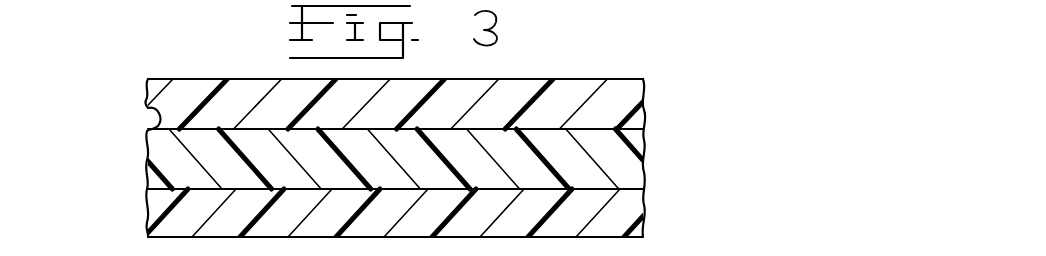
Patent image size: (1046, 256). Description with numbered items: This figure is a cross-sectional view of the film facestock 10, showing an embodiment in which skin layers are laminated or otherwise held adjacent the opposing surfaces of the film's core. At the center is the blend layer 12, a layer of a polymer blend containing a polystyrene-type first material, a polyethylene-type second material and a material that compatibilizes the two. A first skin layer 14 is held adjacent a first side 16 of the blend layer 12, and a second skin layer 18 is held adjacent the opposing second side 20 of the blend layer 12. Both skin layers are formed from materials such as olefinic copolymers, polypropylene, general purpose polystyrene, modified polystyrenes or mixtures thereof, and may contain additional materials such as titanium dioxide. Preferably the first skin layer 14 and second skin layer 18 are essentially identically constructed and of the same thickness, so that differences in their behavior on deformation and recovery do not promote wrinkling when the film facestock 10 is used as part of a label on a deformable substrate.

The film facestock 10 is at (130, 123).
The blend layer 12 is at (620, 162).
The first skin layer 14 is at (622, 94).
The first side 16 is at (148, 108).
The second skin layer 18 is at (624, 216).
The second side 20 is at (147, 206).